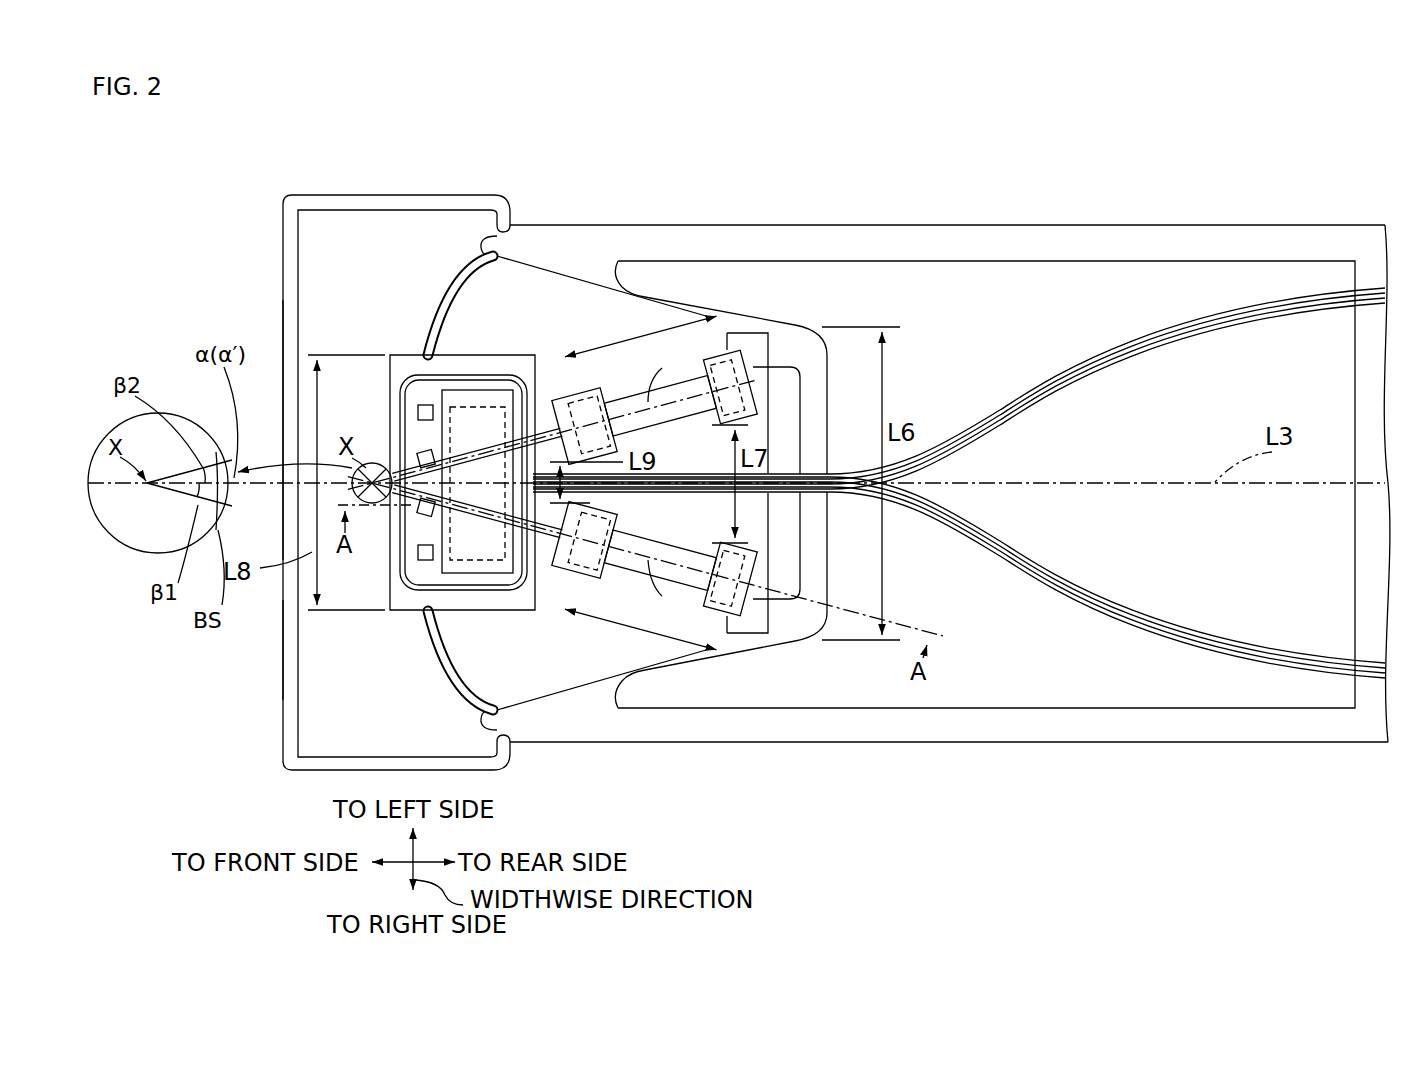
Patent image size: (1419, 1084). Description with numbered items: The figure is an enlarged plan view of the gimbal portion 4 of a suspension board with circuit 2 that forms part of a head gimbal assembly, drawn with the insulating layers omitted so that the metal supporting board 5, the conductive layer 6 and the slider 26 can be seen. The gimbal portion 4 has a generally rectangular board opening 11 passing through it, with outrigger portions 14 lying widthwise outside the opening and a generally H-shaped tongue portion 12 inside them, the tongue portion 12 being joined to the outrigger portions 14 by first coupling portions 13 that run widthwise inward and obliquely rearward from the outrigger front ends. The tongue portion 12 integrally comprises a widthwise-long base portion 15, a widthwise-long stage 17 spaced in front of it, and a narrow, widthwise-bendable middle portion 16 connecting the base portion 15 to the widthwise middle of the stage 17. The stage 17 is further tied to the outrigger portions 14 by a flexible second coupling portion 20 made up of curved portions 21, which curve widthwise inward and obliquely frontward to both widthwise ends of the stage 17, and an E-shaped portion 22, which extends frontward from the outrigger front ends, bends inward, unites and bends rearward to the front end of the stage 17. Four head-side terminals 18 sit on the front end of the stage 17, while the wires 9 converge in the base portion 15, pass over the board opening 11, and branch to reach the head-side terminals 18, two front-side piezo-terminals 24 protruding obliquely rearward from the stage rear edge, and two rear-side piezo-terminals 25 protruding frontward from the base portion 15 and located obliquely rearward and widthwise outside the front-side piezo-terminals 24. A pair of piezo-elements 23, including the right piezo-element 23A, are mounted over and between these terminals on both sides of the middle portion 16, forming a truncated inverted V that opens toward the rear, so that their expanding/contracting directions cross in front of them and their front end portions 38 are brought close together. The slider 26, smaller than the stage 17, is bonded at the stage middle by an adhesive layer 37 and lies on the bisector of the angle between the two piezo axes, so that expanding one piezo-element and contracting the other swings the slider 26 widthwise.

The suspension board with circuit 2 is at (950, 506).
The gimbal portion 4 is at (814, 780).
The metal supporting board 5 is at (1305, 225).
The conductive layer 6 is at (1205, 624).
The wires 9 is at (1205, 342).
The board opening 11 is at (1152, 262).
The tongue portion 12 is at (381, 328).
The first coupling portions 13 is at (694, 303).
The outrigger portions 14 is at (793, 225).
The base portion 15 is at (830, 370).
The middle portion 16 is at (685, 490).
The stage 17 is at (392, 573).
The head-side terminals 18 is at (418, 414).
The second coupling portion 20 is at (281, 673).
The curved portions 21 is at (427, 298).
The E-shaped portion 22 is at (280, 283).
The piezo-elements 23 is at (645, 358).
The right piezo-element 23A is at (640, 628).
The front-side piezo-terminals 24 is at (564, 398).
The rear-side piezo-terminals 25 is at (746, 352).
The slider 26 is at (476, 388).
The adhesive layer 37 is at (483, 565).
The front end portions (slider-side terminal portions) 38 is at (583, 392).